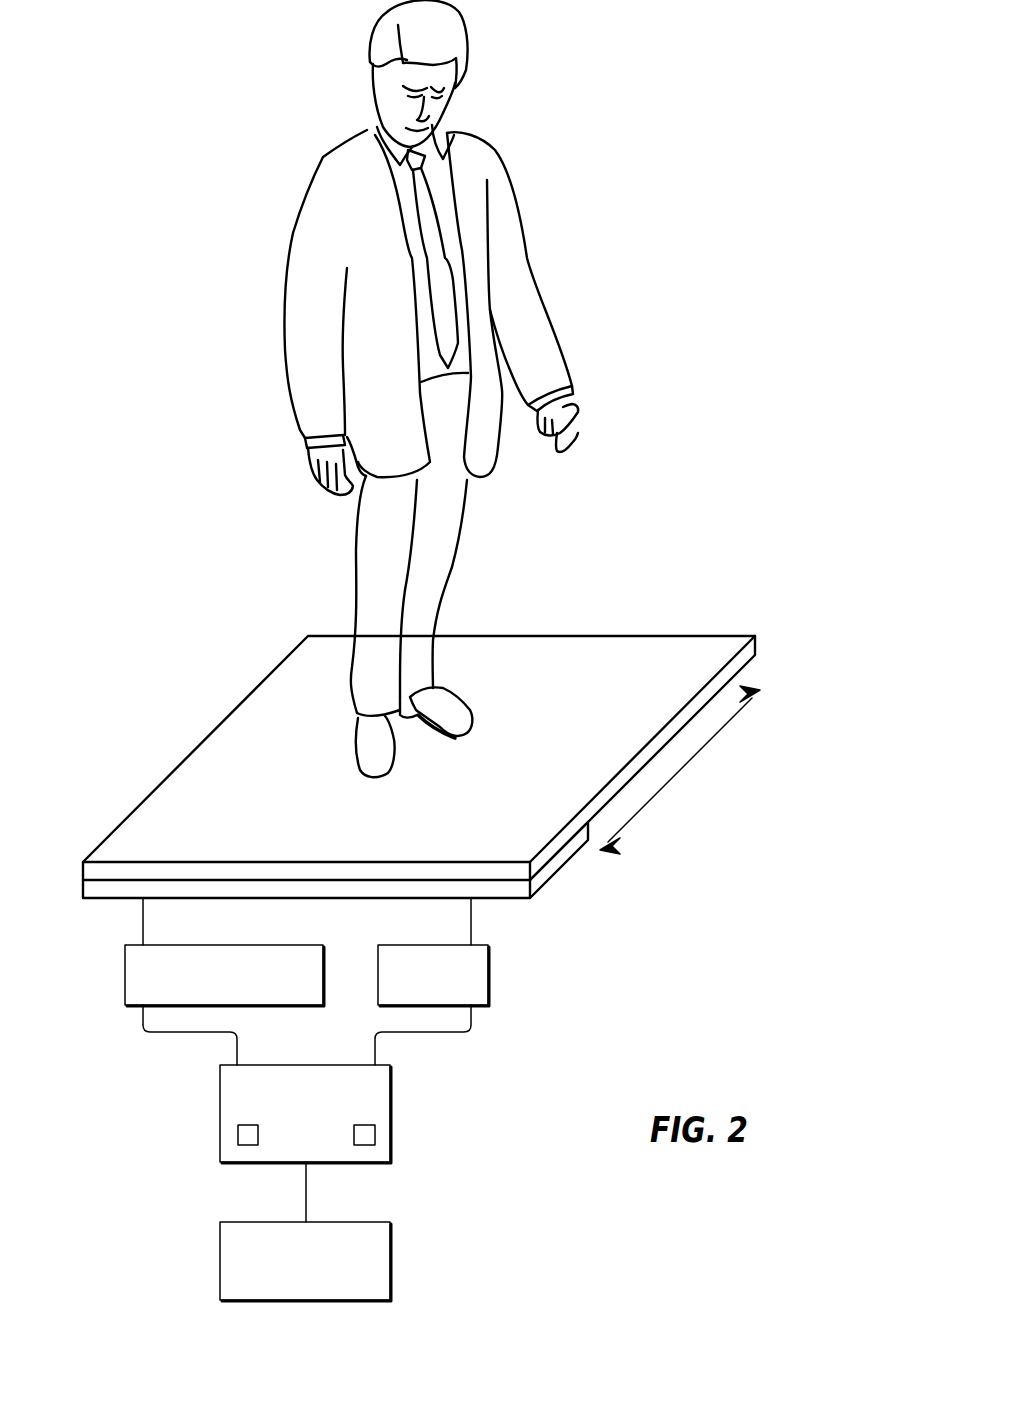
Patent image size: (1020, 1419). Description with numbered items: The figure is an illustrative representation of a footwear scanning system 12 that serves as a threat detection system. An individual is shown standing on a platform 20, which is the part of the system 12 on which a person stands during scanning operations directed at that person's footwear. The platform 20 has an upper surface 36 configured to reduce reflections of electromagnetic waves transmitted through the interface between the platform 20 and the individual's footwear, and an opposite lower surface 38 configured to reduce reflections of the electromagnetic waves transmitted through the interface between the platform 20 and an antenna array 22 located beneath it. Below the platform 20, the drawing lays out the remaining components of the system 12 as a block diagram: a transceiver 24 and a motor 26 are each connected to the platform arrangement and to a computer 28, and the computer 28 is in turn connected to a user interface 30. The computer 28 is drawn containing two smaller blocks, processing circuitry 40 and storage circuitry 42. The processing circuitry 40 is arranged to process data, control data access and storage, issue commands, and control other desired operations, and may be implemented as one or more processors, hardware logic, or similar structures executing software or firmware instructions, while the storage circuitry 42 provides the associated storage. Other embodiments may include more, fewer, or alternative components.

The footwear scanning system 12 is at (697, 344).
The platform 20 is at (450, 708).
The antenna array 22 is at (560, 868).
The transceiver 24 is at (125, 975).
The motor 26 is at (490, 975).
The computer 28 is at (320, 1087).
The user interface 30 is at (391, 1265).
The upper surface 36 is at (675, 656).
The lower surface 38 is at (658, 752).
The processing circuitry 40 is at (238, 1135).
The storage circuitry 42 is at (375, 1135).